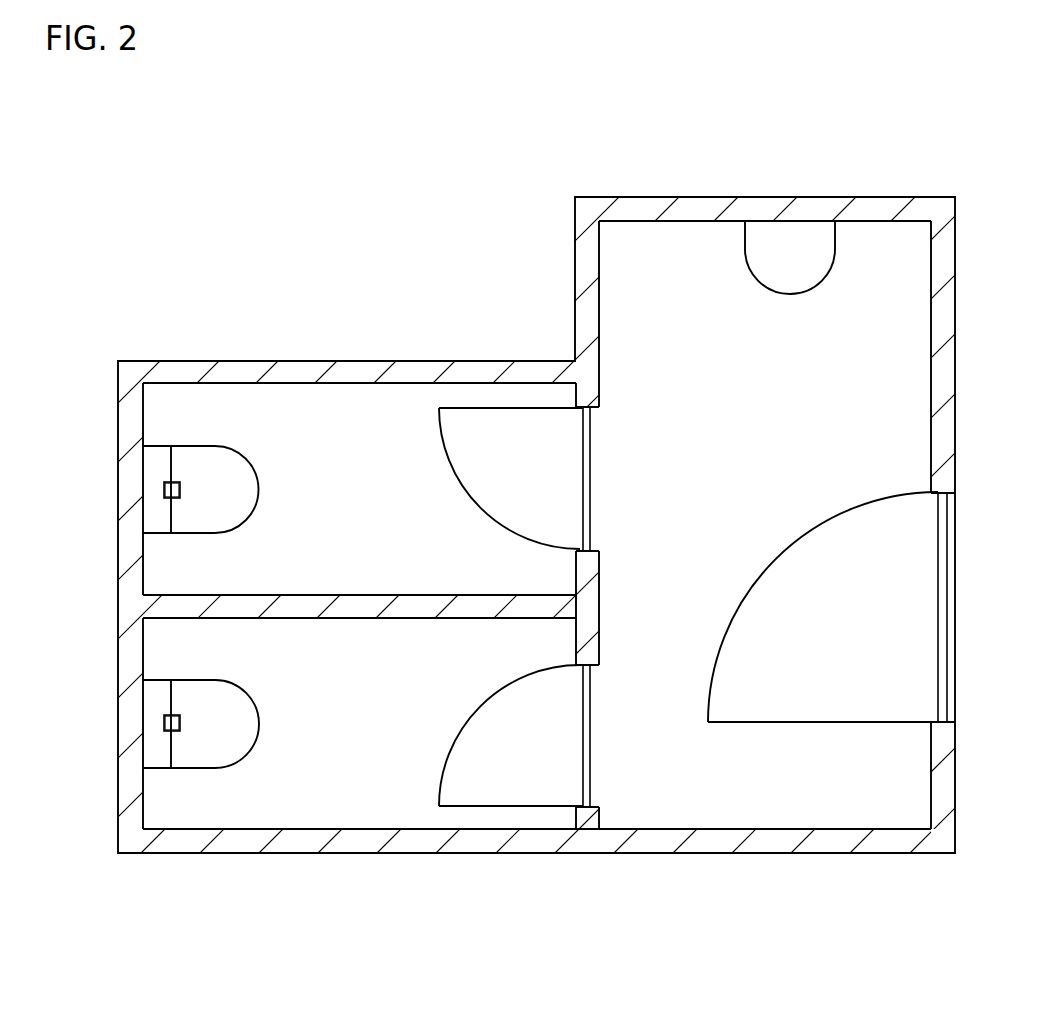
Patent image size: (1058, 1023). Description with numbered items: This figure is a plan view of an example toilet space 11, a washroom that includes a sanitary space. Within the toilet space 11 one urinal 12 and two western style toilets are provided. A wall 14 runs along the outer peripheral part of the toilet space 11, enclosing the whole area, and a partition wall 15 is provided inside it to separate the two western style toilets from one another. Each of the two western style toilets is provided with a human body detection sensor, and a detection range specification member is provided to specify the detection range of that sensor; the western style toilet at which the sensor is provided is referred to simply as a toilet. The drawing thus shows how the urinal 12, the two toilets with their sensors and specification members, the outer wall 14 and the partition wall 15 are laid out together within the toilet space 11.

The toilet space 11 is at (677, 183).
The urinal 12 is at (837, 239).
The wall 14 is at (395, 360).
The partition wall 15 is at (369, 619).